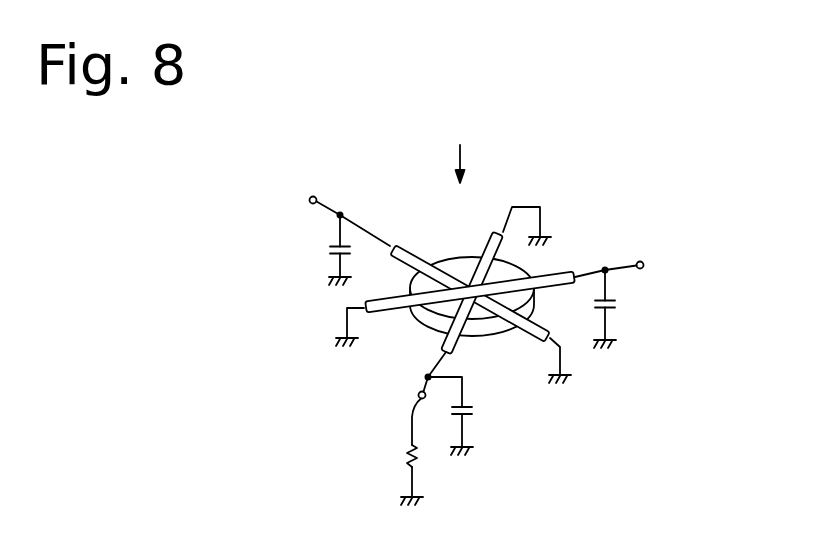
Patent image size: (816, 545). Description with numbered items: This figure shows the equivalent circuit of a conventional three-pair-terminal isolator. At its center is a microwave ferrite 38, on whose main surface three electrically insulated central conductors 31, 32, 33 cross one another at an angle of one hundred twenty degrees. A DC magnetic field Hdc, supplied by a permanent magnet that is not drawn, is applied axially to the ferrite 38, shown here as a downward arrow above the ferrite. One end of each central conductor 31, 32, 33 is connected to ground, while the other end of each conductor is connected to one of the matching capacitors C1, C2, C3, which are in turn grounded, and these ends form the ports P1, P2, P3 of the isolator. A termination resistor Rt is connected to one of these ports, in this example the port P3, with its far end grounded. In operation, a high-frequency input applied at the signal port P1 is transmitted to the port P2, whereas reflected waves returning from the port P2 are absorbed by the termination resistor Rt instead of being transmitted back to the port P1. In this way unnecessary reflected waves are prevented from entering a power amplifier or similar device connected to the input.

The central conductor 31 is at (401, 246).
The central conductor 32 is at (565, 272).
The central conductor 33 is at (438, 348).
The microwave ferrite 38 is at (459, 256).
The signal port P1 is at (644, 264).
The port P2 is at (310, 197).
The port P3 is at (418, 395).
The matching capacitor C1 is at (617, 305).
The matching capacitor C2 is at (327, 250).
The matching capacitor C3 is at (476, 411).
The termination resistor Rt is at (405, 455).
The DC magnetic field Hdc is at (481, 164).